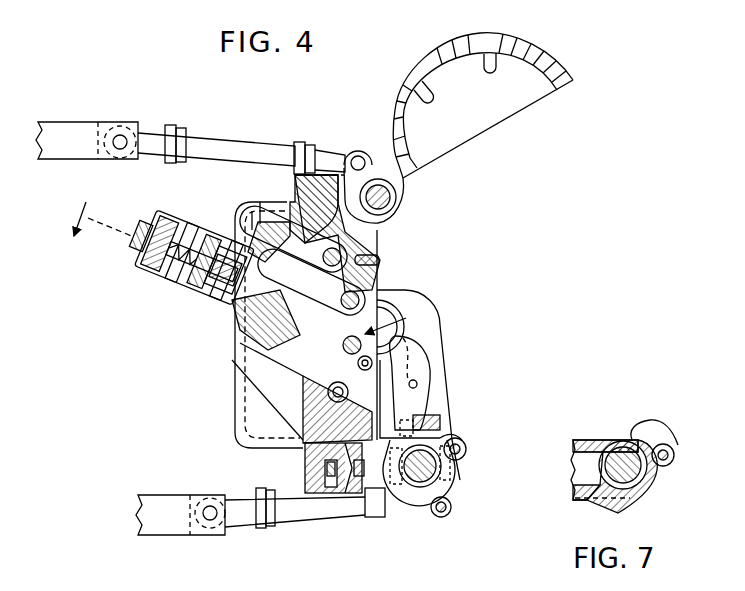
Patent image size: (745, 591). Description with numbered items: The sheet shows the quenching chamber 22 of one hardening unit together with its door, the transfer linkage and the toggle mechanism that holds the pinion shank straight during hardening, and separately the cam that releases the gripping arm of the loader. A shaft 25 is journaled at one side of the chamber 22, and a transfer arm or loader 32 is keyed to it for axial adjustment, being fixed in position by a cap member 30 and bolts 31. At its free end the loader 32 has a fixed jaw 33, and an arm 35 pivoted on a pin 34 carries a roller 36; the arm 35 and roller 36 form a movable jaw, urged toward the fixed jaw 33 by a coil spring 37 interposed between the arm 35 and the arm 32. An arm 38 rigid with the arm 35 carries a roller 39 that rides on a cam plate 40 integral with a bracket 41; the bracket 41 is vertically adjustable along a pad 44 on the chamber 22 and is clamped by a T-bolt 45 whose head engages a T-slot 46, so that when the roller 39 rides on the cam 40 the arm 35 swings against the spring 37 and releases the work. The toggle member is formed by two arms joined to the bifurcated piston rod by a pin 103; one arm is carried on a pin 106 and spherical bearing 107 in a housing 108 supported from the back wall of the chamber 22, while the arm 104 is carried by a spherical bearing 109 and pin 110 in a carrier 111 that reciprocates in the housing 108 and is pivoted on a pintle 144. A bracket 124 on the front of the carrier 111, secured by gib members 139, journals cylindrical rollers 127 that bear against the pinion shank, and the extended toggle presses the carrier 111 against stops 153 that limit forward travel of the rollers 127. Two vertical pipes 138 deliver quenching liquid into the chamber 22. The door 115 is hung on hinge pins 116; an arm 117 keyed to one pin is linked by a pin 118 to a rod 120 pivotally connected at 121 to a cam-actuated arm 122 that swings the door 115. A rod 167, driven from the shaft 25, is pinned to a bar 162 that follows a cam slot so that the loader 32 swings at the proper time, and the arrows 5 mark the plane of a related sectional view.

In FIG. 4, the section line 5- 5 is at (230, 274).
In FIG. 4, the quenching chamber 22 is at (247, 419).
In FIG. 4, the shaft 25 is at (423, 507).
In FIG. 7, the shaft 25 is at (619, 450).
In FIG. 4, the cap member 30 is at (411, 503).
In FIG. 4, the bolts 31 is at (452, 470).
In FIG. 4, the transfer arm or loader 32 is at (440, 375).
In FIG. 4, the fixed jaw 33 is at (390, 327).
In FIG. 4, the pin 34 is at (416, 382).
In FIG. 4, the arm 35 is at (410, 403).
In FIG. 4, the roller 36 is at (357, 364).
In FIG. 4, the coil spring 37 is at (438, 421).
In FIG. 4, the arm 38 is at (452, 438).
In FIG. 7, the arm 38 is at (650, 428).
In FIG. 4, the roller 39 is at (467, 452).
In FIG. 7, the roller 39 is at (675, 456).
In FIG. 4, the cam plate 40 is at (436, 516).
In FIG. 7, the cam plate 40 is at (629, 509).
In FIG. 4, the bracket 41 is at (368, 512).
In FIG. 7, the bracket 41 is at (575, 501).
In FIG. 4, the pad 44 is at (306, 478).
In FIG. 4, the T-bolt 45 is at (351, 469).
In FIG. 4, the T-slot 46 is at (320, 516).
In FIG. 4, the pin 103 is at (197, 298).
In FIG. 4, the arm 104 is at (188, 245).
In FIG. 4, the pin 106 is at (148, 270).
In FIG. 4, the spherical bearing 107 is at (148, 230).
In FIG. 4, the housing 108 is at (170, 292).
In FIG. 4, the spherical bearing 109 is at (230, 305).
In FIG. 4, the pin 110 is at (263, 204).
In FIG. 4, the carrier 111 is at (303, 205).
In FIG. 4, the door 115 is at (543, 56).
In FIG. 4, the hinge pins 116 is at (396, 196).
In FIG. 4, the arm 117 is at (359, 157).
In FIG. 4, the pin 118 is at (345, 168).
In FIG. 4, the rod 120 is at (234, 150).
In FIG. 4, the pivotal connection 121 is at (121, 137).
In FIG. 4, the arm 122 is at (85, 148).
In FIG. 4, the bracket 124 is at (352, 296).
In FIG. 4, the cylindrical rollers 127 is at (379, 283).
In FIG. 4, the vertical pipes 138 is at (379, 262).
In FIG. 4, the gib members 139 is at (427, 582).
In FIG. 4, the pintle 144 is at (335, 250).
In FIG. 4, the stops 153 is at (336, 340).
In FIG. 4, the rod or bar 162 is at (173, 527).
In FIG. 4, the rod 167 is at (290, 534).